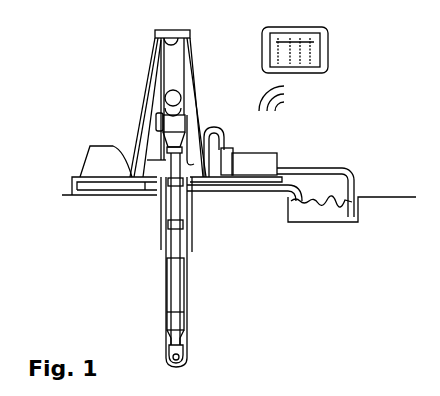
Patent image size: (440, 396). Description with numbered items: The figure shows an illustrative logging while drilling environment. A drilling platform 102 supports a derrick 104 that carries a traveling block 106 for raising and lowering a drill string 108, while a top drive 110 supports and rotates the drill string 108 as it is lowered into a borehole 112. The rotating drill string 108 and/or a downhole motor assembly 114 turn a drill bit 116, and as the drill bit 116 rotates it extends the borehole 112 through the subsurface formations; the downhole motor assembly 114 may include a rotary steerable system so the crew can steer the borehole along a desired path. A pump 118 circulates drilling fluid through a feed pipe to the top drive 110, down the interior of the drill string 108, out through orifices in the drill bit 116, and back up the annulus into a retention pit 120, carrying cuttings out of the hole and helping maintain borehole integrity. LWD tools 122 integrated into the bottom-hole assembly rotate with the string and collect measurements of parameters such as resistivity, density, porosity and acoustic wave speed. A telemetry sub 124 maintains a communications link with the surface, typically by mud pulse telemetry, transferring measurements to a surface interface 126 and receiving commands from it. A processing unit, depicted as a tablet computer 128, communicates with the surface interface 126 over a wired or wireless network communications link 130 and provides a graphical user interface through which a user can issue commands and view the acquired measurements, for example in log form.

The drilling platform 102 is at (72, 183).
The derrick 104 is at (153, 50).
The traveling block 106 is at (160, 93).
The drill string 108 is at (167, 252).
The top drive 110 is at (158, 118).
The borehole 112 is at (168, 280).
The downhole motor assembly 114 is at (167, 327).
The drill bit 116 is at (167, 357).
The pump 118 is at (277, 163).
The retention pit 120 is at (287, 213).
The LWD tools 122 is at (167, 303).
The telemetry sub 124 is at (182, 277).
The surface interface 126 is at (230, 148).
The tablet computer 128 is at (263, 47).
The network communications link 130 is at (281, 93).